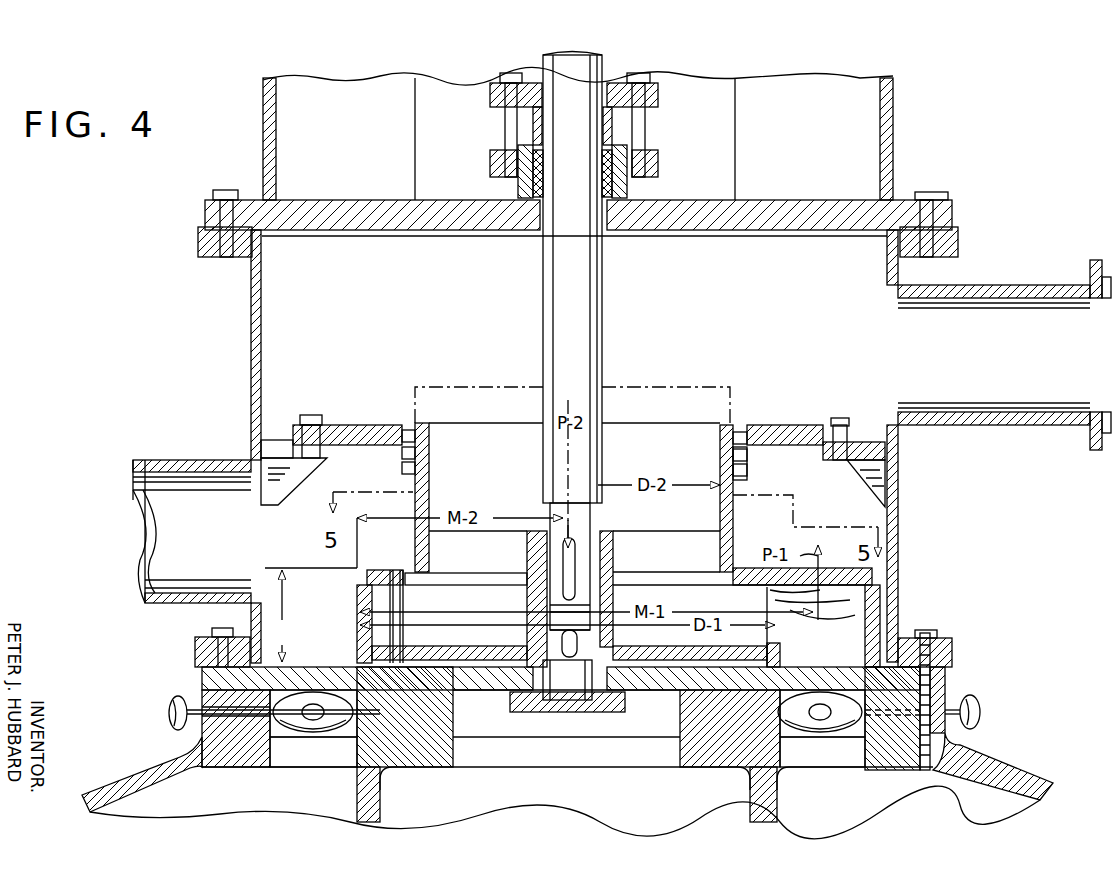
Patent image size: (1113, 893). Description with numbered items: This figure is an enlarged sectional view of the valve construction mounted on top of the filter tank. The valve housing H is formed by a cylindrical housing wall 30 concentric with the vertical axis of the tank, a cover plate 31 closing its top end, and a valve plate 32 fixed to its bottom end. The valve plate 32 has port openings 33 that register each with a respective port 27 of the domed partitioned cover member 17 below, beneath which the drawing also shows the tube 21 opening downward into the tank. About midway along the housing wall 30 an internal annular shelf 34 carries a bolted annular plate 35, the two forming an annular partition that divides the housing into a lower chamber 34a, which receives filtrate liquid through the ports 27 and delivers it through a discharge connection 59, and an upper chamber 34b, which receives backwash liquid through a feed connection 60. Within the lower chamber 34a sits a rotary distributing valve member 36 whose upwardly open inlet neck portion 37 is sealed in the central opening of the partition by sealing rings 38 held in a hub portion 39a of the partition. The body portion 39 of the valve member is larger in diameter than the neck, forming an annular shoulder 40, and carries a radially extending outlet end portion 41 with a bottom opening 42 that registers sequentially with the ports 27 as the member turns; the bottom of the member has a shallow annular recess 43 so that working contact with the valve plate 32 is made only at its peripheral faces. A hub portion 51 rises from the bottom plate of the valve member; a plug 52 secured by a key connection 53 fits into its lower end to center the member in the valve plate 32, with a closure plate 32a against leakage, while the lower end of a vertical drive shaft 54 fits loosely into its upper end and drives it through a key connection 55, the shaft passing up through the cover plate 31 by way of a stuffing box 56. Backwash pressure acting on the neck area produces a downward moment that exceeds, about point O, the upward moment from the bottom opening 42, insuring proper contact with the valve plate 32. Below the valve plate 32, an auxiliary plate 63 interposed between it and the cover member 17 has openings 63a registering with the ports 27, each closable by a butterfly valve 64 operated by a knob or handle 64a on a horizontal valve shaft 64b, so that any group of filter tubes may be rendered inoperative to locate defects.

The valve housing H is at (213, 322).
The domed partitioned cover member 17 is at (143, 770).
The outlet pipe 21 is at (368, 802).
The port 27 is at (304, 763).
The cylindrical housing wall 30 is at (253, 388).
The cover plate 31 is at (366, 200).
The valve plate 32 is at (203, 683).
The closure plate 32a is at (530, 712).
The port opening 33 is at (309, 687).
The internal annular shelf 34 is at (270, 440).
The lower chamber 34a is at (336, 627).
The upper chamber 34b is at (375, 340).
The annular plate 35 is at (356, 425).
The rotary distributing valve member 36 is at (745, 557).
The inlet neck portion 37 is at (428, 464).
The sealing ring 38 is at (732, 465).
The body portion 39 is at (311, 615).
The hub portion of annular partition 39a is at (748, 470).
The annular shoulder 40 is at (372, 572).
The outlet end portion 41 is at (880, 607).
The bottom opening 42 is at (842, 653).
The shallow annular recess 43 is at (650, 663).
The hub portion 51 is at (613, 602).
The plug 52 is at (582, 688).
The key connection 53 is at (560, 637).
The vertical drive shaft 54 is at (580, 326).
The key connection 55 is at (585, 575).
The stuffing box 56 is at (492, 107).
The discharge connection 59 is at (178, 460).
The feed connection 60 is at (1003, 290).
The auxiliary plate 63 is at (208, 728).
The opening 63a is at (338, 735).
The butterfly valve 64 is at (328, 700).
The knob or handle 64a is at (173, 702).
The horizontal valve shaft 64b is at (233, 717).
The point O is at (360, 665).